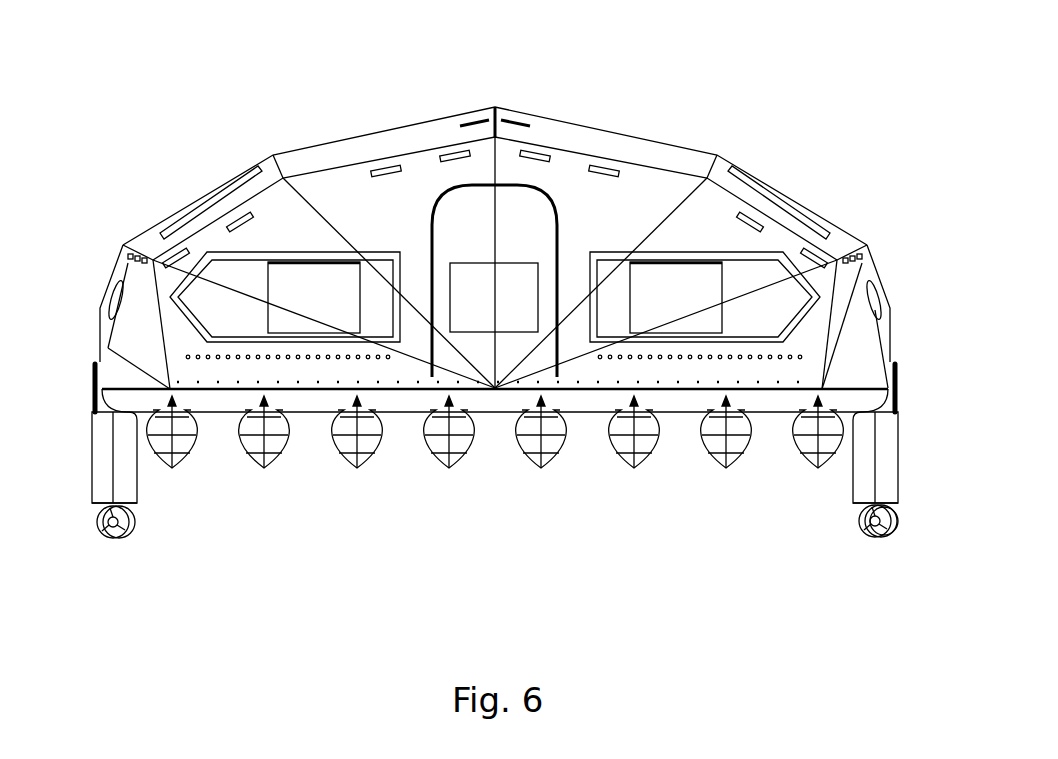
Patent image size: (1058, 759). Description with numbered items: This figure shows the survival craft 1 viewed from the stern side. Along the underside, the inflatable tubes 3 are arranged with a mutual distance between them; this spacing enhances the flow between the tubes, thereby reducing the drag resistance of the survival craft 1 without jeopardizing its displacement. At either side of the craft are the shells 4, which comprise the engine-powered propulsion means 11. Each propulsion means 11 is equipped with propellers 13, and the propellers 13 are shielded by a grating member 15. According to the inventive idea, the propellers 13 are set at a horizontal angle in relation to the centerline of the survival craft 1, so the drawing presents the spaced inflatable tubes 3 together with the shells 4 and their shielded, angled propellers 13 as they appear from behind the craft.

The survival craft 1 is at (717, 123).
The inflatable tubes 3 is at (277, 453).
The shells 4 is at (92, 440).
The engine-powered propulsion means 11 is at (138, 495).
The propellers 13 is at (123, 536).
The grating member 15 is at (893, 526).